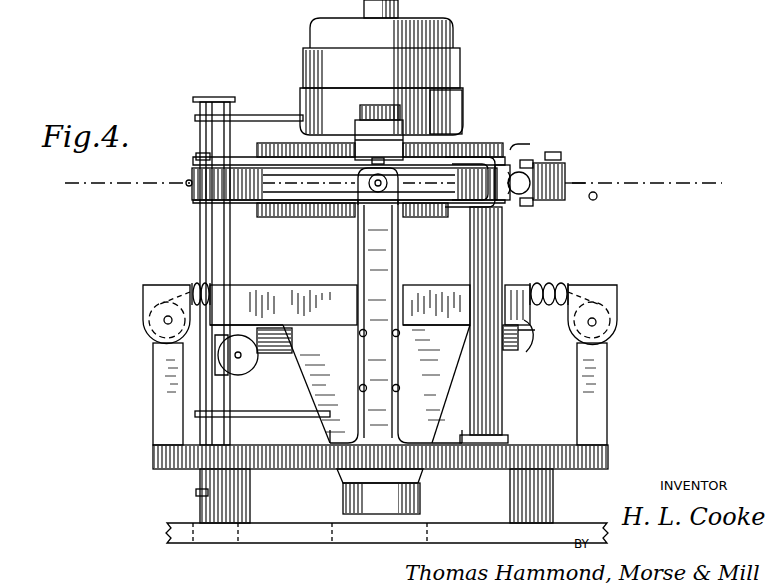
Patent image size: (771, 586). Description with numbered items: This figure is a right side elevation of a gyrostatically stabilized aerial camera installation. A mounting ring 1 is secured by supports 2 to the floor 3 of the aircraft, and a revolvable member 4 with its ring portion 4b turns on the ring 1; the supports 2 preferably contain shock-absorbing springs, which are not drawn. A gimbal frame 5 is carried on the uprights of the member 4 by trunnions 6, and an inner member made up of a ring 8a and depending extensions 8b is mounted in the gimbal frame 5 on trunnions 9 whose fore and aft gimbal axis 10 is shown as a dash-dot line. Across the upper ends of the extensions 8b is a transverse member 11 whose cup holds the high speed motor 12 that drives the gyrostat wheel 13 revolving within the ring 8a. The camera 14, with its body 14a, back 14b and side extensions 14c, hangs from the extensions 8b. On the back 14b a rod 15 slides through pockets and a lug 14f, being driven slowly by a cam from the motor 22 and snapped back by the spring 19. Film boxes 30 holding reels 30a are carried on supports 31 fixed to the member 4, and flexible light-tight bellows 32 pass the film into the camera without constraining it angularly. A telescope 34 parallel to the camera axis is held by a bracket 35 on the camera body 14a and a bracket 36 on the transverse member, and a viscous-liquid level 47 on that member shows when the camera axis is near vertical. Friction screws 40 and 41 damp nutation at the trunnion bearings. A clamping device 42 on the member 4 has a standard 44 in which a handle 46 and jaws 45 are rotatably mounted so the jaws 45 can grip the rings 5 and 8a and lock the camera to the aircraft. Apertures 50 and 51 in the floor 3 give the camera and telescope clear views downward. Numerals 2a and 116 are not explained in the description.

The ring 1 is at (301, 470).
The supports 2 is at (215, 507).
The vertical rod 2a is at (398, 250).
The floor 3 is at (300, 542).
The member 4 is at (396, 439).
The ring portion 4b is at (247, 458).
The gimbal frame 5 is at (327, 190).
The trunnions 6 is at (378, 198).
The ring 8a is at (288, 208).
The depending extensions 8b is at (355, 250).
The trunnions 9 is at (186, 186).
The fore and aft gimbal axis 10 is at (386, 187).
The transverse member 11 is at (368, 130).
The high speed motor 12 is at (456, 30).
The gyrostat wheel 13 is at (462, 143).
The camera 14 is at (340, 384).
The camera body 14a is at (338, 426).
The camera back 14b is at (297, 285).
The side extensions 14c is at (272, 328).
The lug 14f is at (405, 275).
The rod 15 is at (520, 353).
The spring 19 is at (528, 350).
The motor 22 is at (246, 360).
The film boxes 30 is at (150, 302).
The reels 30a is at (160, 326).
The supports 31 is at (153, 364).
The flexible light-tight bellows 32 is at (194, 287).
The telescope 34 is at (212, 233).
The bracket 35 is at (262, 411).
The bracket 36 is at (252, 118).
The friction screw 40 is at (378, 158).
The friction screw 41 is at (553, 160).
The clamping device 42 is at (530, 144).
The standard 44 is at (504, 417).
The jaws 45 is at (497, 153).
The handle 46 is at (569, 183).
The level 47 is at (374, 106).
The aperture 50 is at (333, 540).
The aperture 51 is at (210, 540).
The head portion 116 is at (448, 100).